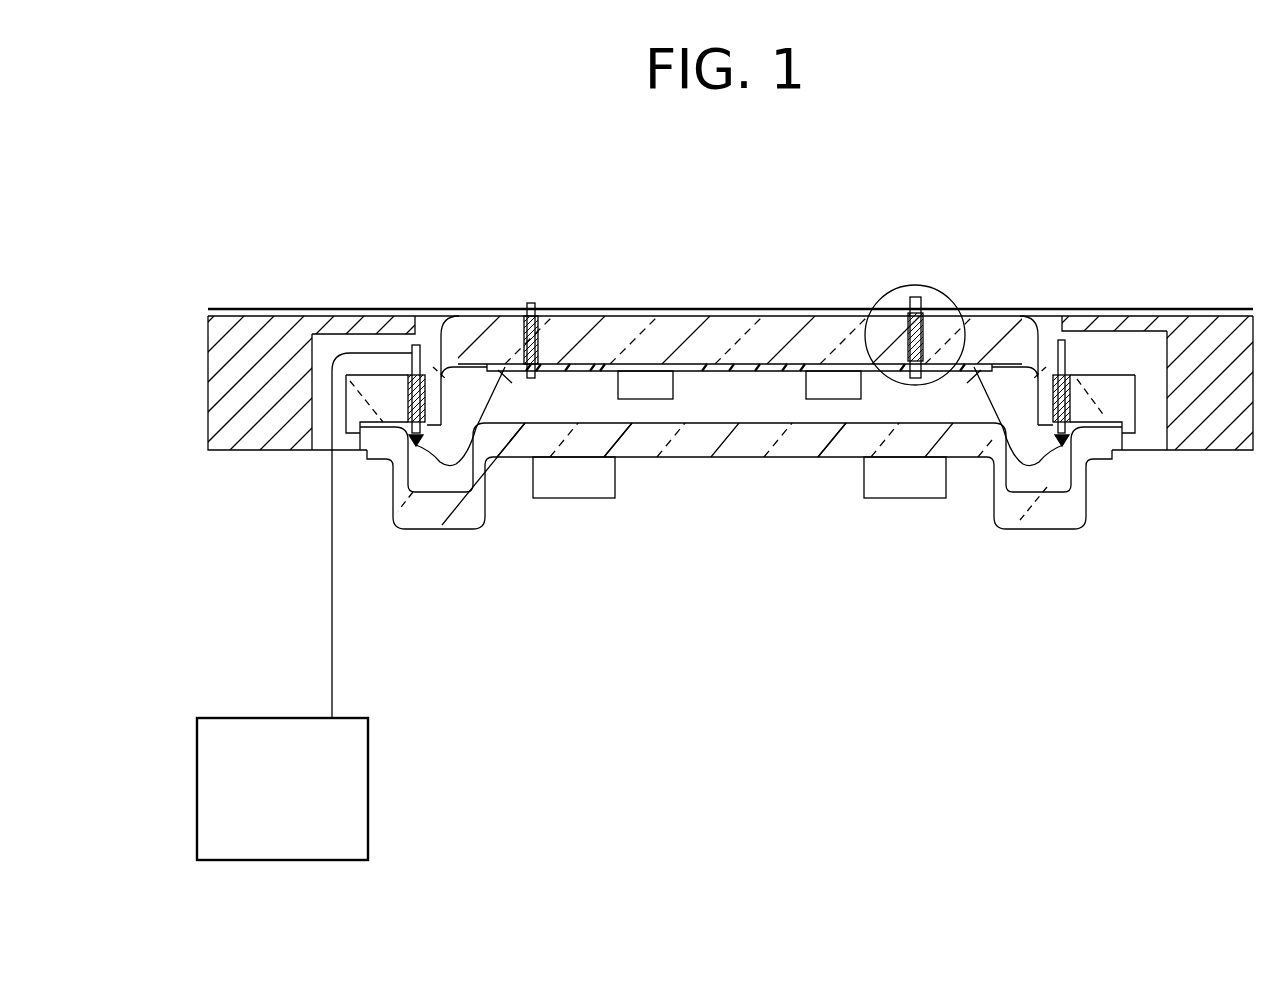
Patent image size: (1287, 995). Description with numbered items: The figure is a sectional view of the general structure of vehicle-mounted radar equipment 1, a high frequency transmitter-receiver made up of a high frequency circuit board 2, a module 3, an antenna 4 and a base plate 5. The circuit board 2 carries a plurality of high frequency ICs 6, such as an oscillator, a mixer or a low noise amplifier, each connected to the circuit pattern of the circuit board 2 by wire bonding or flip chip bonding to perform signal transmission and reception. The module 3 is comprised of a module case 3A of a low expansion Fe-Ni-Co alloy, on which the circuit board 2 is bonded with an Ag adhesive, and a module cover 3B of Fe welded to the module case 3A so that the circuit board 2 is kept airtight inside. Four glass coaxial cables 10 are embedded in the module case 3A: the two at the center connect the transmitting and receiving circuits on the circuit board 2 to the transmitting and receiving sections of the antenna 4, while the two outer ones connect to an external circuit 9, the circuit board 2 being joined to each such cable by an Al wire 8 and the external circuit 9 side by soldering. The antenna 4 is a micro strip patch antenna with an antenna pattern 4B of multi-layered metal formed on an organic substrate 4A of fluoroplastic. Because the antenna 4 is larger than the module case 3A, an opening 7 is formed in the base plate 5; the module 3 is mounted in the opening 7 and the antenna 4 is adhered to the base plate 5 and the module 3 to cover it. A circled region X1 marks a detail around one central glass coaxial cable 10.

The vehicle-mounted radar equipment 1 is at (1197, 296).
The high frequency circuit board 2 is at (750, 363).
The module 3 is at (815, 557).
The module case 3A is at (720, 350).
The module cover 3B is at (790, 445).
The antenna 4 is at (1088, 216).
The organic substrate 4A is at (1010, 325).
The antenna pattern 4B is at (1036, 318).
The base plate 5 is at (258, 352).
The IC 6 is at (820, 368).
The opening 7 is at (427, 340).
The Al wire 8 is at (446, 468).
The external circuit 9 is at (368, 787).
The glass coaxial cable 10 is at (528, 345).
The detail region X1 is at (918, 285).